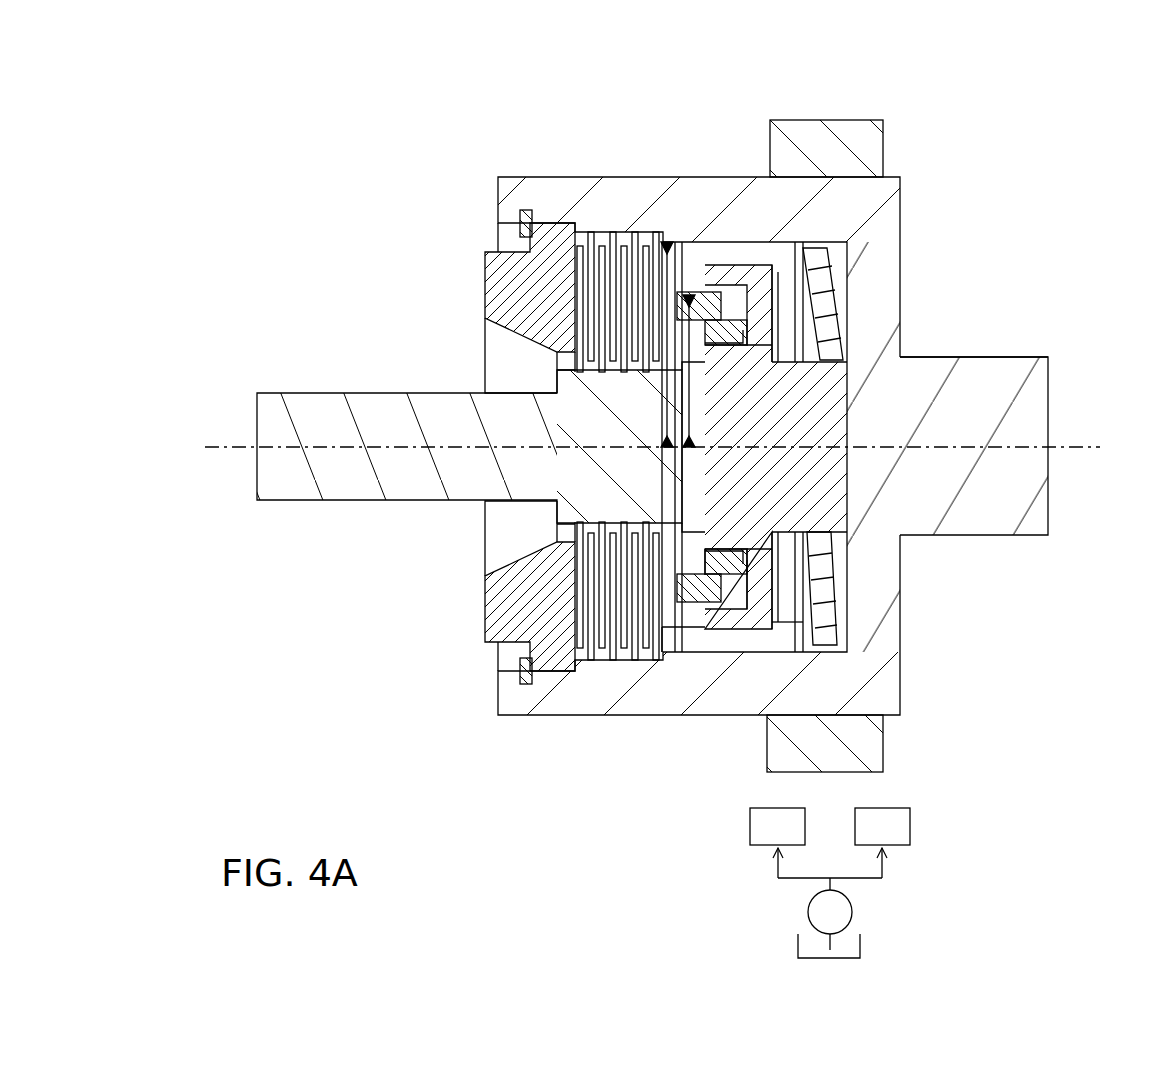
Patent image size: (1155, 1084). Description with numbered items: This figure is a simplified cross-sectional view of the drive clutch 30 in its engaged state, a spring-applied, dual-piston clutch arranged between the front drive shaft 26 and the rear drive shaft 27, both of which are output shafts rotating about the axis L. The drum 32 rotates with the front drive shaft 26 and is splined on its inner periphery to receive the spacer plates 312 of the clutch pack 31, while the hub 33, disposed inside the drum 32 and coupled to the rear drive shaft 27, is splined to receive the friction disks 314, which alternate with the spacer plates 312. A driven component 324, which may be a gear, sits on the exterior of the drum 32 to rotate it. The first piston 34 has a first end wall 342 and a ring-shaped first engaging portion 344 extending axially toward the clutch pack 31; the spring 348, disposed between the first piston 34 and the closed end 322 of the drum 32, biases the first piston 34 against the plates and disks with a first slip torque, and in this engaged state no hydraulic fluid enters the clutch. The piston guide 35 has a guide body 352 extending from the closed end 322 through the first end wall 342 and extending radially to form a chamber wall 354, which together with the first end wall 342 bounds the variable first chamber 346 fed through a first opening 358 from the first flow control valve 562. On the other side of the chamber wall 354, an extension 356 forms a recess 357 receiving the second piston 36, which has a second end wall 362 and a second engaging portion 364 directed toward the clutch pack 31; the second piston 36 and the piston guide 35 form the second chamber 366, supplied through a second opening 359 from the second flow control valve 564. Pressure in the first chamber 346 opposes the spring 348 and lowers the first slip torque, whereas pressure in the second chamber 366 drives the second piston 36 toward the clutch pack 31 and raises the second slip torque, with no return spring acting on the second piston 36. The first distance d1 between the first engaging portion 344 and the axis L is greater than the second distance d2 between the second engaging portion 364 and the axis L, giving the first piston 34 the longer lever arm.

The drive clutch 30 is at (440, 140).
The clutch pack 31 is at (585, 222).
The spacer plate 312 is at (560, 365).
The friction disk 314 is at (630, 232).
The drum 32 is at (700, 195).
The closed end 322 is at (905, 540).
The driven component 324 is at (862, 140).
The hub 33 is at (580, 482).
The first piston 34 is at (748, 232).
The first end wall 342 is at (790, 298).
The first engaging portion 344 is at (740, 232).
The first chamber 346 is at (792, 310).
The spring 348 is at (822, 600).
The piston guide 35 is at (832, 428).
The guide body 352 is at (740, 470).
The chamber wall 354 is at (757, 290).
The extension 356 is at (745, 640).
The recess 357 is at (718, 640).
The first opening 358 is at (778, 555).
The second opening 359 is at (750, 560).
The second piston 36 is at (686, 602).
The second end wall 362 is at (745, 318).
The second engaging portion 364 is at (696, 284).
The second chamber 366 is at (800, 340).
The front drive shaft 26 is at (1028, 395).
The rear drive shaft 27 is at (330, 393).
The first flow control valve 562 is at (857, 700).
The second flow control valve 564 is at (788, 700).
The first distance d1 is at (654, 344).
The second distance d2 is at (703, 371).
The axis L is at (662, 469).